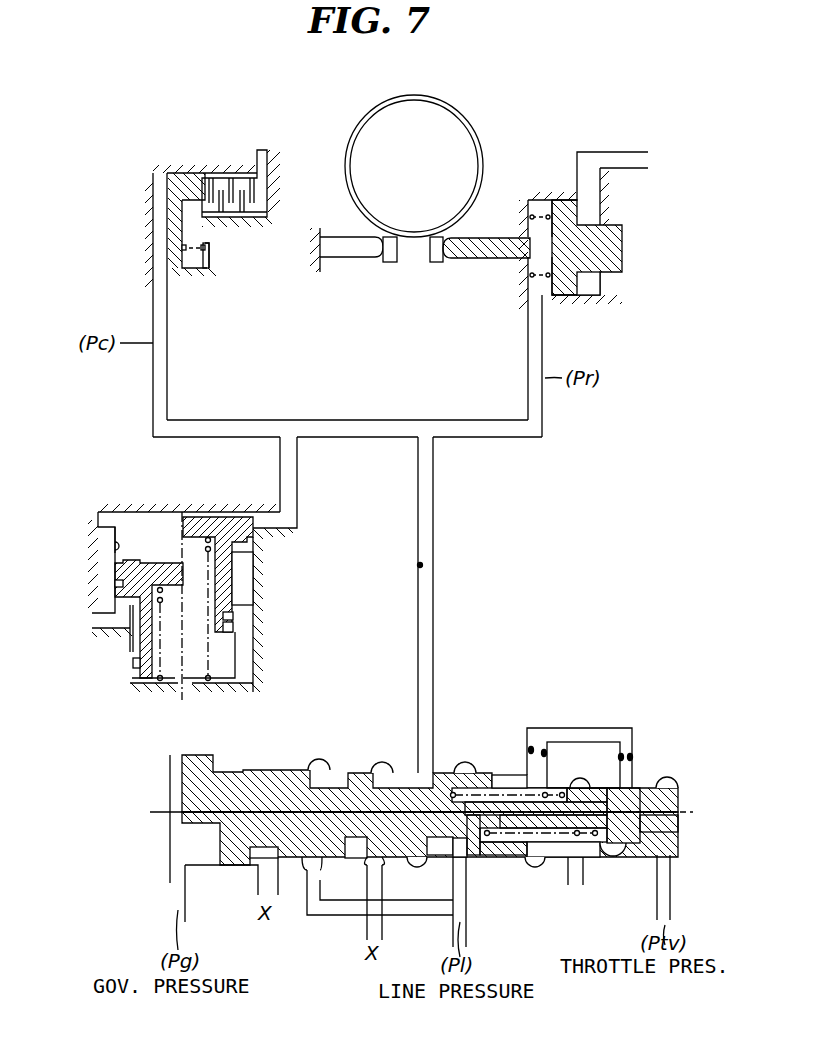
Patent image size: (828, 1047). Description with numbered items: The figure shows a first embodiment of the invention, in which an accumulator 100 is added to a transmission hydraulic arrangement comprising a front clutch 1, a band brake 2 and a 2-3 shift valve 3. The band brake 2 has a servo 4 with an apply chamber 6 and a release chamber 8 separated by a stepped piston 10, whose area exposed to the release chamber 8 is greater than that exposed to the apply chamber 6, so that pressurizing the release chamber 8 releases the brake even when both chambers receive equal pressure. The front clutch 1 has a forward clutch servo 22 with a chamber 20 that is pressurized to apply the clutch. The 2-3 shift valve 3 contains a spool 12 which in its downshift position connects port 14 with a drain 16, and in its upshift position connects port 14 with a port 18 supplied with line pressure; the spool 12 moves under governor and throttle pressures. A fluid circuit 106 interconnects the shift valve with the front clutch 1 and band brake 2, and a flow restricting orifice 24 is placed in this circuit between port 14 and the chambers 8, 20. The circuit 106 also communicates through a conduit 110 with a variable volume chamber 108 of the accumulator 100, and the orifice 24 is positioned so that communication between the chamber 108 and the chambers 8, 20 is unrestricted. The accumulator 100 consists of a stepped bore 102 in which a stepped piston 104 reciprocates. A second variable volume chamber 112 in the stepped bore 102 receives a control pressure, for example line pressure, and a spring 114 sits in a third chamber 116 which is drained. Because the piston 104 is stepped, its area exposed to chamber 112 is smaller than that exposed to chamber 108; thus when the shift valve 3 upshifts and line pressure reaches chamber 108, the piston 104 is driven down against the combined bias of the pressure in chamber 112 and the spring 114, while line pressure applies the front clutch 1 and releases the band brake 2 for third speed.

The front clutch 1 is at (182, 157).
The band brake 2 is at (343, 153).
The 2-3 shift valve 3 is at (572, 700).
The servo 4 is at (575, 269).
The apply chamber 6 is at (586, 292).
The release chamber 8 is at (540, 290).
The stepped piston 10 is at (612, 240).
The spool 12 is at (400, 776).
The port 14 is at (430, 768).
The drain 16 is at (372, 858).
The port 18 is at (457, 860).
The chamber 20 is at (160, 195).
The forward clutch servo 22 is at (207, 280).
The flow restricting orifice 24 is at (433, 563).
The accumulator 100 is at (179, 580).
The stepped bore 102 is at (113, 548).
The stepped piston 104 is at (115, 575).
The fluid circuit 106 is at (352, 420).
The variable volume chamber 108 is at (133, 525).
The conduit 110 is at (298, 487).
The second variable volume chamber 112 is at (245, 583).
The spring 114 is at (205, 648).
The third chamber 116 is at (222, 673).